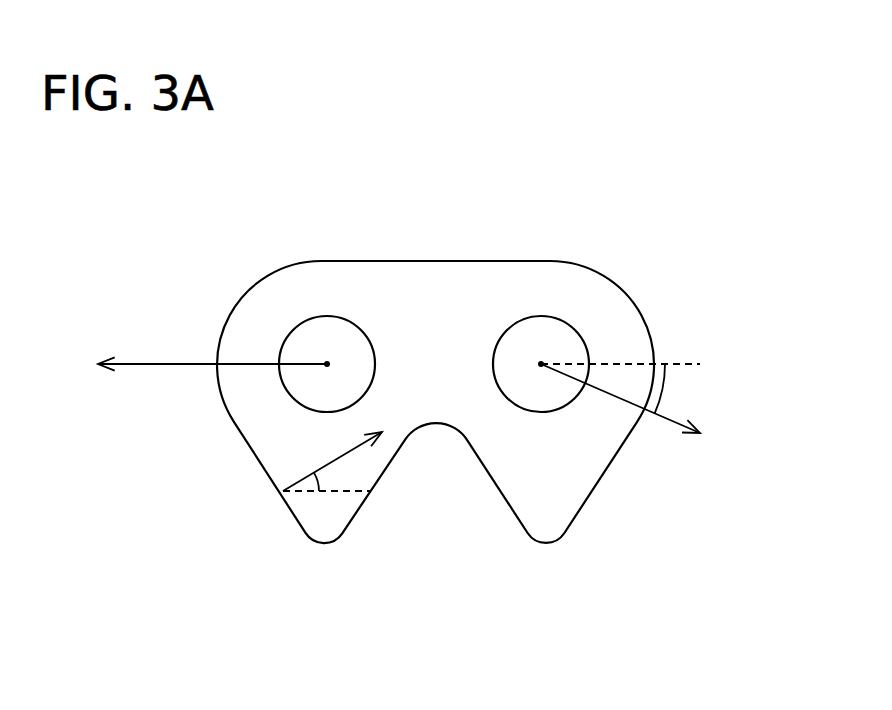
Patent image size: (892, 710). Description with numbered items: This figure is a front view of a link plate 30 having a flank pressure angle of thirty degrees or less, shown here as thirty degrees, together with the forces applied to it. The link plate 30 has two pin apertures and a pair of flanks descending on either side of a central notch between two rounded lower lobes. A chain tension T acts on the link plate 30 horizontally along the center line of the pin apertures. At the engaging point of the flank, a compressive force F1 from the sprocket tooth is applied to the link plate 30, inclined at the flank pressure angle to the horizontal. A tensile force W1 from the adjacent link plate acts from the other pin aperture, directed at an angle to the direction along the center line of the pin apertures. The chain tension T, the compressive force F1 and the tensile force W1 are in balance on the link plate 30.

The link plate 30 is at (497, 217).
The chain tension T is at (212, 349).
The compressive force F1 is at (332, 459).
The tensile force W1 is at (648, 416).